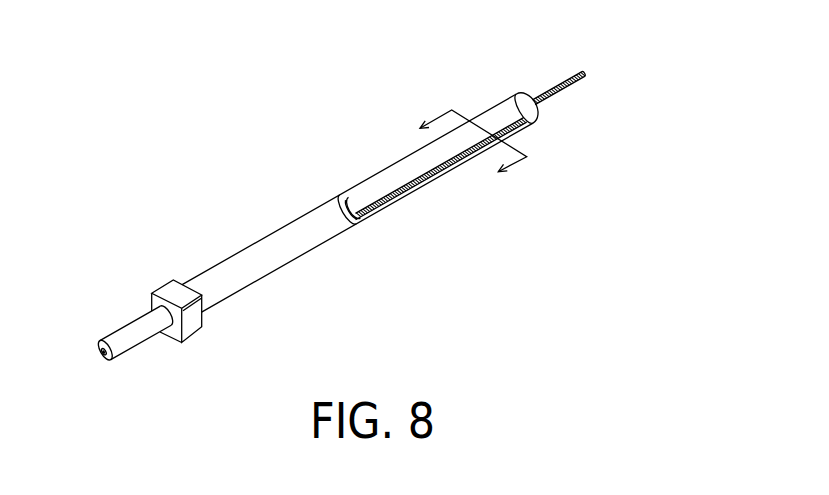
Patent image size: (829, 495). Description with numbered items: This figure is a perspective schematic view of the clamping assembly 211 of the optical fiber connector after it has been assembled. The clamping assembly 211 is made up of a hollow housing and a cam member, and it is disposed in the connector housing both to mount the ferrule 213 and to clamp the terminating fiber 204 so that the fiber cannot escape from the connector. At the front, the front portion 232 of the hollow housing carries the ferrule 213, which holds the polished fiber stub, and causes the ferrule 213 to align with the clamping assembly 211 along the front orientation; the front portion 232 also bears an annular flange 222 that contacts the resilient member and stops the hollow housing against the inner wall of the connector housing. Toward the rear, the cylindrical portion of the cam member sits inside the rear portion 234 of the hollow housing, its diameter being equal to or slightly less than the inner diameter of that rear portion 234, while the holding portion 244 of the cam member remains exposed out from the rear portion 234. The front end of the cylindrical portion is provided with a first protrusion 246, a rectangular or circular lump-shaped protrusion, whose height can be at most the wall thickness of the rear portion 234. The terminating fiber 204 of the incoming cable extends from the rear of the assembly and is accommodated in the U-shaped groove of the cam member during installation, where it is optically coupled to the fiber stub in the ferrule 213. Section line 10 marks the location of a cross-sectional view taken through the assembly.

The section line for FIG. 10 is at (485, 138).
The terminating fiber 204 is at (565, 87).
The clamping assembly 211 is at (256, 238).
The ferrule 213 is at (135, 327).
The annular flange 222 is at (158, 298).
The front portion 232 is at (190, 324).
The rear portion 234 is at (488, 122).
The holding portion 244 is at (522, 96).
The first protrusion 246 is at (345, 194).